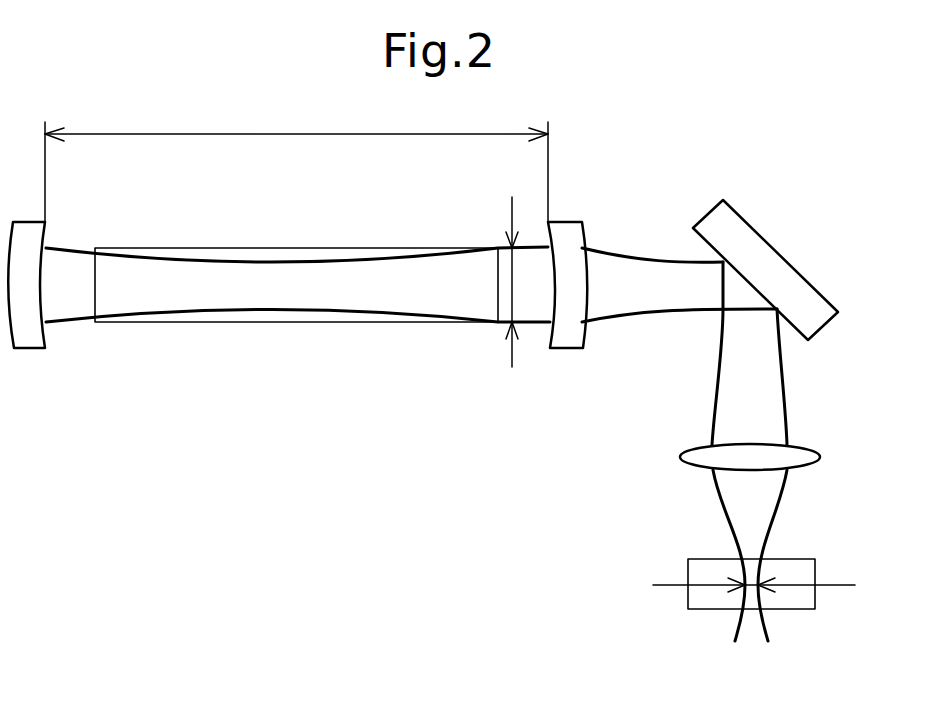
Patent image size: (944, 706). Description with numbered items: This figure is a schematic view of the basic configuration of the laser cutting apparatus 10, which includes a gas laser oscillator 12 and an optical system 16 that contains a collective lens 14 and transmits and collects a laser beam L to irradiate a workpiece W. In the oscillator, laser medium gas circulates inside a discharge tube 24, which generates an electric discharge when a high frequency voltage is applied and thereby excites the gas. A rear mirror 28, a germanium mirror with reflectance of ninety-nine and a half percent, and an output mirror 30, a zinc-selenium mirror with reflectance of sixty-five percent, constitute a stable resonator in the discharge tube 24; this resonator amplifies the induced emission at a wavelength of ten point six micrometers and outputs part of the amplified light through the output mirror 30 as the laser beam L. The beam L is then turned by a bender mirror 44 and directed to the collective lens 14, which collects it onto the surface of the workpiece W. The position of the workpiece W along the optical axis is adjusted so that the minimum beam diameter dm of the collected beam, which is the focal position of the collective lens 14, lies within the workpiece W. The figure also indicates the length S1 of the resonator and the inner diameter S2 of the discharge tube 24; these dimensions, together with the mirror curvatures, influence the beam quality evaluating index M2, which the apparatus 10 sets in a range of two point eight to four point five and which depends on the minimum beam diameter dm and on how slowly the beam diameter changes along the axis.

The laser cutting apparatus 10 is at (806, 222).
The gas laser oscillator 12 is at (191, 375).
The collective lens 14 is at (797, 458).
The optical system 16 is at (798, 370).
The discharge tube 24 is at (296, 324).
The rear mirror 28 is at (29, 337).
The output mirror 30 is at (570, 333).
The bender mirror 44 is at (743, 232).
The laser beam L is at (632, 268).
The workpiece W is at (703, 597).
The length of the resonator S1 is at (296, 163).
The inner diameter of the discharge tube S2 is at (495, 287).
The beam quality evaluating index M2 is at (786, 515).
The minimum beam diameter dm is at (759, 574).